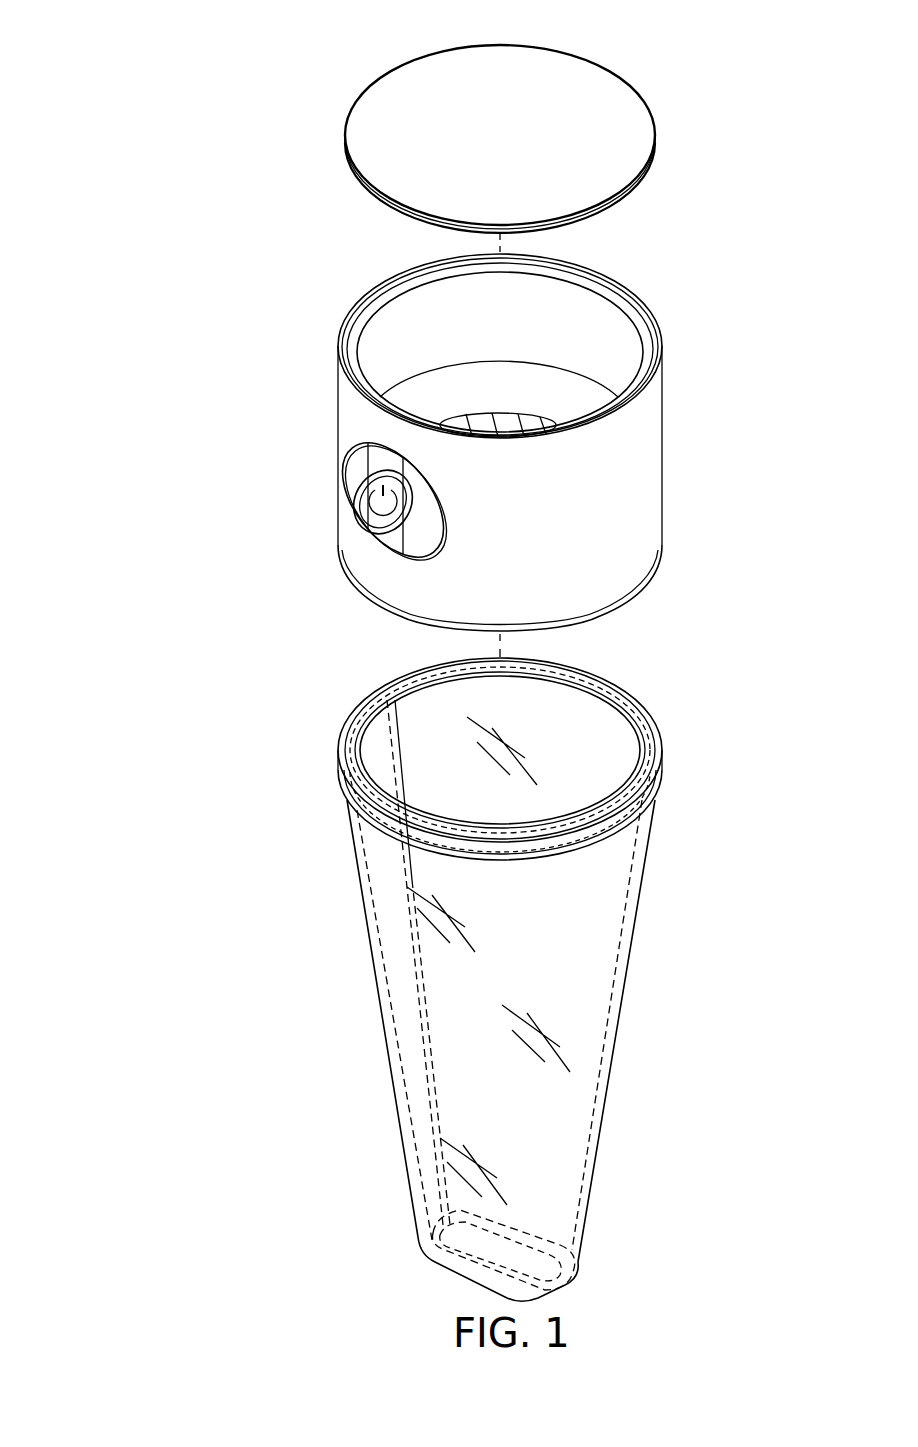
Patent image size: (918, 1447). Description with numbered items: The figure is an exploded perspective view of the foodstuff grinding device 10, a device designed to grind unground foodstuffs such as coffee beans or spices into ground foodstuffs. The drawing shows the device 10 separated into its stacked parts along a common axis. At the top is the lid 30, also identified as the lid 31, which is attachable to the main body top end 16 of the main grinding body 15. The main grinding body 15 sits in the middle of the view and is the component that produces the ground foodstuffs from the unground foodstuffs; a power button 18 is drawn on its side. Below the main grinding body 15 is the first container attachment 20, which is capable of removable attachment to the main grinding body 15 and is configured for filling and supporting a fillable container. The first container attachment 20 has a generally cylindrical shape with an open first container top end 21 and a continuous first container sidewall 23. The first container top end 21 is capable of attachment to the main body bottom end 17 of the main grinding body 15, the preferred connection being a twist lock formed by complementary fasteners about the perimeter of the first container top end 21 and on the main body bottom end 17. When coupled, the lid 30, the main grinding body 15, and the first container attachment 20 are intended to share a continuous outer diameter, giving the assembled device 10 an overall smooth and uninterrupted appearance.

The foodstuff grinding device 10 is at (128, 183).
The lid 30 is at (306, 183).
The lid 31 is at (620, 175).
The main grinding body 15 is at (303, 477).
The main body top end 16 is at (365, 297).
The main body bottom end 17 is at (418, 622).
The power button 18 is at (358, 565).
The first container attachment 20 is at (302, 1023).
The first container top end 21 is at (360, 712).
The first container sidewall 23 is at (418, 1122).